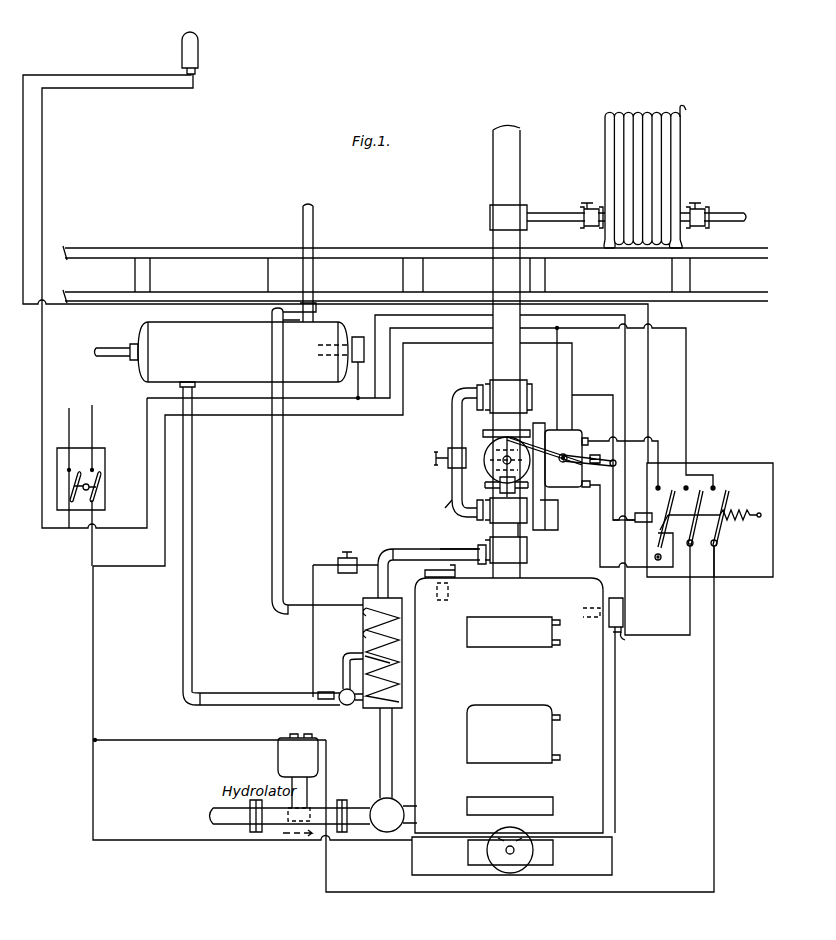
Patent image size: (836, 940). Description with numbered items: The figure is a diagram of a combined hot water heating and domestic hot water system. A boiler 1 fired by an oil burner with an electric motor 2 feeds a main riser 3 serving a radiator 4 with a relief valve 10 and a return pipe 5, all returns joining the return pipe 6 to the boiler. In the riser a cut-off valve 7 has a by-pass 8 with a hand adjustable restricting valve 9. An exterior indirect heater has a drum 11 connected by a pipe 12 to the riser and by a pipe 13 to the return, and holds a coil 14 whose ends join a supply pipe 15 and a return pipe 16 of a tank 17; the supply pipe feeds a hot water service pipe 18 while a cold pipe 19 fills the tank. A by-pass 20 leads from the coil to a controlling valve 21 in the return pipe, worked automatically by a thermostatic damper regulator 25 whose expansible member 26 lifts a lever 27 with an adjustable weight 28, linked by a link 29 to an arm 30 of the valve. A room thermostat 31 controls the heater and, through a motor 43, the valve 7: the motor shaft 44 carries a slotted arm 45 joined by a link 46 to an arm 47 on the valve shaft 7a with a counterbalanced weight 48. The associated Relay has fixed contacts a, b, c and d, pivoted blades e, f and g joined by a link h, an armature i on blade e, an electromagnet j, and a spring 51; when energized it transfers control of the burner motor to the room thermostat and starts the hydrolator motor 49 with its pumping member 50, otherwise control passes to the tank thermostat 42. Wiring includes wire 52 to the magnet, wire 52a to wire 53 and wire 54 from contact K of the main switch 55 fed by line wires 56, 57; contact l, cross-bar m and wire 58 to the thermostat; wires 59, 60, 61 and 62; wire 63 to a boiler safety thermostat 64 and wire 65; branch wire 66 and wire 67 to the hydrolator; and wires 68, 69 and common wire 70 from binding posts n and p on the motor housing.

The boiler 1 is at (512, 726).
The electric motor 2 is at (512, 873).
The main riser 3 is at (493, 362).
The radiator 4 is at (650, 180).
The return pipe 5 is at (732, 210).
The return pipe 6 is at (206, 808).
The cut-off valve 7 is at (484, 462).
The shaft 7a is at (503, 464).
The by-pass 8 is at (452, 428).
The restricting valve 9 is at (440, 456).
The relief valve 10 is at (686, 112).
The drum 11 is at (363, 629).
The pipe 12 is at (460, 548).
The pipe 13 is at (380, 745).
The coil 14 is at (366, 645).
The supply pipe 15 is at (283, 478).
The return pipe 16 is at (215, 690).
The tank 17 is at (243, 352).
The hot water service pipe 18 is at (313, 230).
The pipe 19 is at (110, 355).
The by-pass 20 is at (343, 672).
The controlling valve 21 is at (347, 705).
The thermostatic damper regulator 25 is at (425, 576).
The longitudinally expansible member 26 is at (436, 552).
The lever 27 is at (325, 563).
The adjustable weight 28 is at (347, 573).
The link 29 is at (313, 632).
The arm 30 is at (324, 699).
The thermostatic control device 31 is at (198, 47).
The thermostatic device 42 is at (358, 337).
The motor 43 is at (568, 430).
The motor operated shaft 44 is at (565, 462).
The slotted arm 45 is at (616, 462).
The link 46 is at (538, 424).
The arm 47 is at (492, 446).
The counterbalanced weight 48 is at (470, 486).
The motor 49 is at (278, 755).
The pumping member 50 is at (288, 820).
The spring 51 is at (740, 505).
The wire 52 is at (660, 307).
The wire 52a is at (600, 386).
The wire 53 is at (580, 360).
The wire 54 is at (93, 650).
The main switch 55 is at (100, 452).
The line wire 56 is at (96, 412).
The line wire 57 is at (69, 408).
The wire 58 is at (42, 218).
The wire 59 is at (328, 398).
The branch wire 60 is at (358, 392).
The branch wire 61 is at (557, 383).
The wire 62 is at (424, 318).
The wire 63 is at (615, 775).
The boiler safety thermostatic control device 64 is at (623, 612).
The wire 65 is at (622, 645).
The branch wire 66 is at (200, 740).
The wire 67 is at (326, 780).
The wire 68 is at (658, 445).
The wire 69 is at (613, 535).
The common wire 70 is at (600, 562).
The relay Relay is at (710, 511).
The fixed contact a is at (663, 517).
The fixed contact b is at (691, 516).
The fixed contact c is at (718, 516).
The fixed contact d is at (664, 562).
The pivoted blade e is at (694, 525).
The pivoted blade f is at (697, 532).
The pivoted blade g is at (721, 532).
The link h is at (707, 561).
The armature i is at (659, 529).
The electromagnet j is at (640, 512).
The movable contact K is at (106, 480).
The movable contact l is at (74, 486).
The link m is at (98, 490).
The binding post n is at (588, 441).
The binding post p is at (590, 491).